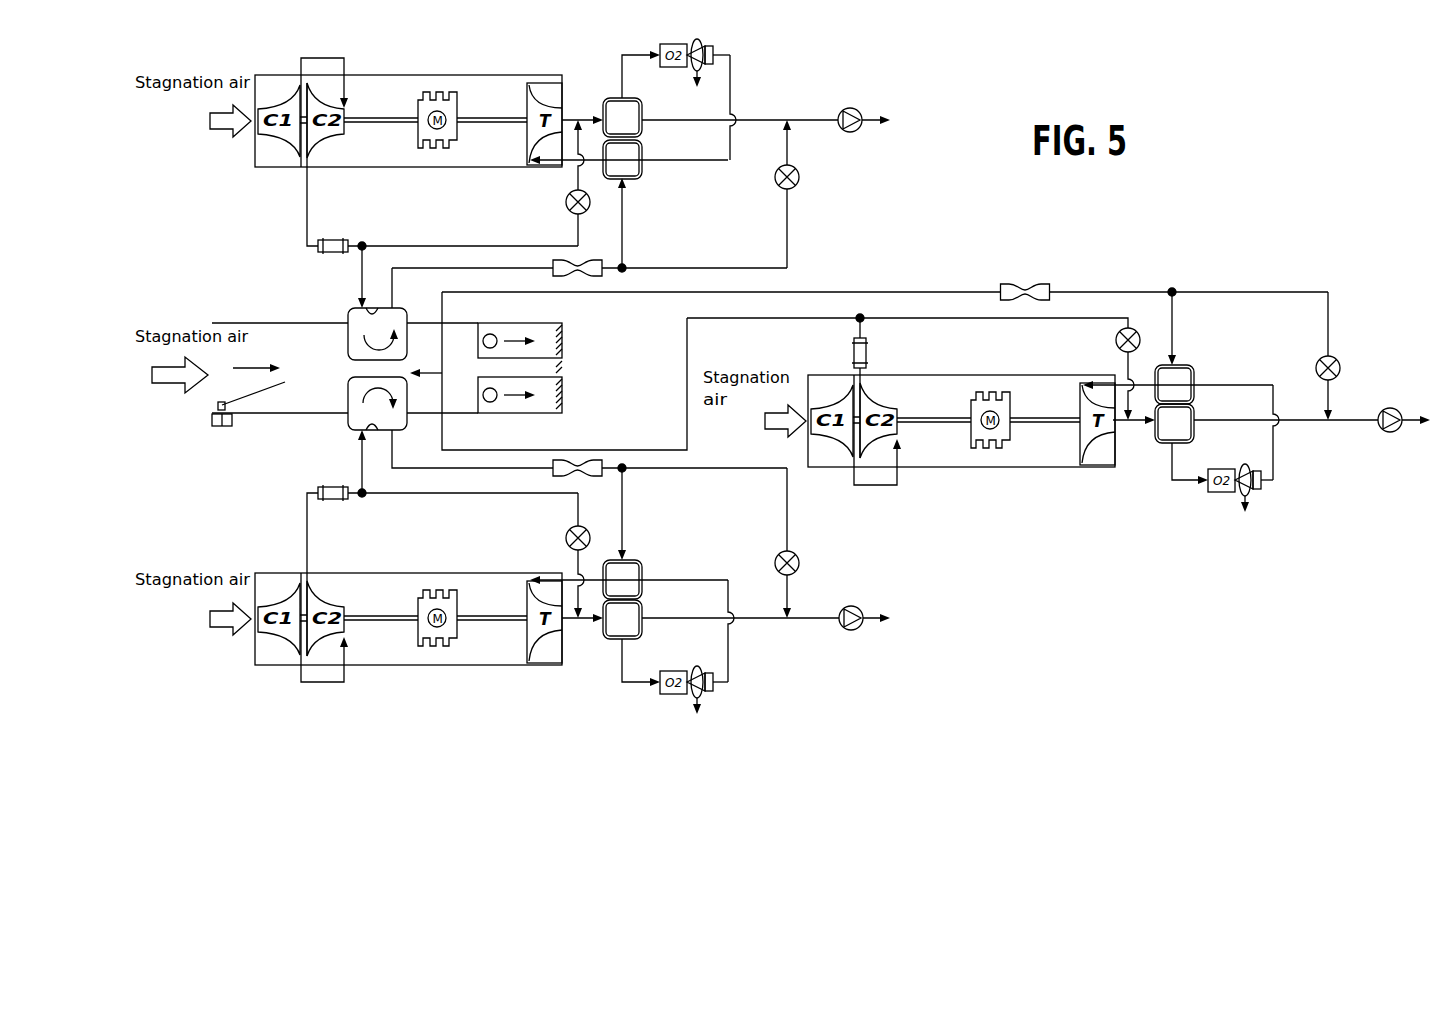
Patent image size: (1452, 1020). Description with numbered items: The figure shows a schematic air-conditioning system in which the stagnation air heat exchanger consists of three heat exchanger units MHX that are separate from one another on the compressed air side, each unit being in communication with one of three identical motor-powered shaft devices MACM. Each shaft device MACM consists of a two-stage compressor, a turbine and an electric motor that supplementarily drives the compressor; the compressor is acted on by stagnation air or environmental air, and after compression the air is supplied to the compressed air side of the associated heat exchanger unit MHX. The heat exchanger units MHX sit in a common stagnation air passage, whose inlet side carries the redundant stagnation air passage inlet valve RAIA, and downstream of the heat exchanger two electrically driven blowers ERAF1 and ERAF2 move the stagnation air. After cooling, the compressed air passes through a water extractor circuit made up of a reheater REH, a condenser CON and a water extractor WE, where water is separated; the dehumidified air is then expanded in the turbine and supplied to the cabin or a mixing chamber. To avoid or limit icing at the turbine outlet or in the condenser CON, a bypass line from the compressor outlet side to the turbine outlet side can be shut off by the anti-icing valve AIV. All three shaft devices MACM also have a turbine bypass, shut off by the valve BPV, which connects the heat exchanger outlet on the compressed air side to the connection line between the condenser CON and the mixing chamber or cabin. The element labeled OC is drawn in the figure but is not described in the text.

The shaft device MACM is at (685, 371).
The ozone converter OC is at (604, 369).
The anti-icing valve AIV is at (835, 369).
The condenser CON is at (898, 368).
The reheater REH is at (898, 369).
The water extractor WE is at (947, 376).
The bypass valve BPV is at (1079, 369).
The stagnation air heat exchanger unit MHX is at (353, 378).
The blower ERAF1 is at (520, 328).
The blower ERAF2 is at (520, 404).
The stagnation air passage inlet valve RAIA is at (221, 420).